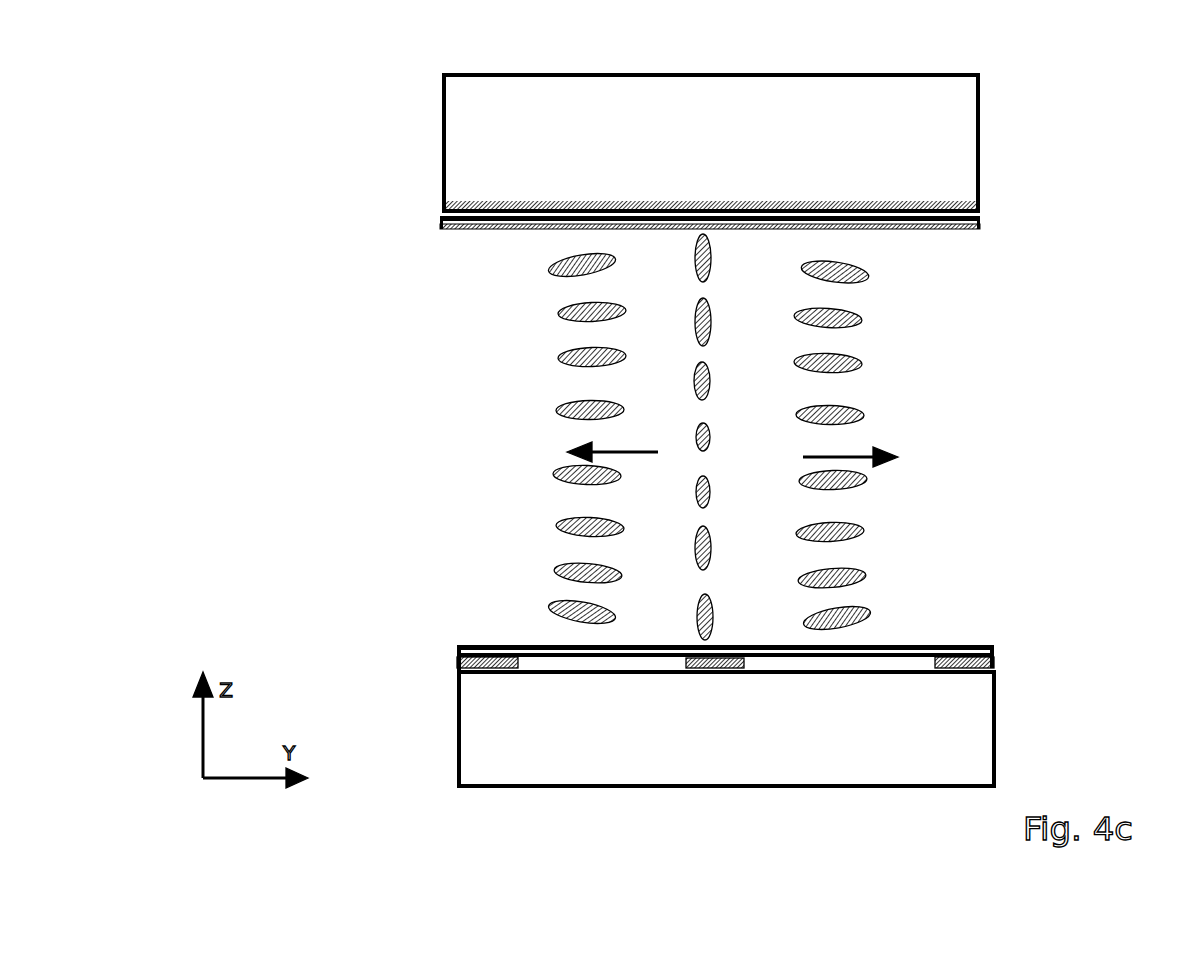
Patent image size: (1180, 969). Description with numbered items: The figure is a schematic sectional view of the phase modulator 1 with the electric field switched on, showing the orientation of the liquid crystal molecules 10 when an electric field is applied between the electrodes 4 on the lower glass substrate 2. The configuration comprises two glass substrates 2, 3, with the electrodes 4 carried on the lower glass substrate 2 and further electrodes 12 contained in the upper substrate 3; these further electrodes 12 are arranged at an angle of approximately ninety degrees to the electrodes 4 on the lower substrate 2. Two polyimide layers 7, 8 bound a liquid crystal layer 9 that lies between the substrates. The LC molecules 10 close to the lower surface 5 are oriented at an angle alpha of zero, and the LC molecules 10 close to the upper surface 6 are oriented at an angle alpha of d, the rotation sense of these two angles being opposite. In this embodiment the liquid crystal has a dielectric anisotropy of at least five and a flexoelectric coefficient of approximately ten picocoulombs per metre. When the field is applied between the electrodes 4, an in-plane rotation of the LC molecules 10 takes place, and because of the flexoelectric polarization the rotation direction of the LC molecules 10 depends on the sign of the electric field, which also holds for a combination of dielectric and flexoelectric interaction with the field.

The phase modulator 1 is at (1036, 70).
The lower glass substrate 2 is at (726, 729).
The upper glass substrate 3 is at (711, 143).
The electrodes 4 is at (701, 689).
The lower surface 5 is at (499, 638).
The upper surface 6 is at (502, 232).
The polyimide layer 7 is at (731, 635).
The polyimide layer 8 is at (724, 233).
The liquid crystal layer 9 is at (721, 437).
The LC molecules 10 is at (720, 437).
The further electrodes 12 is at (729, 185).